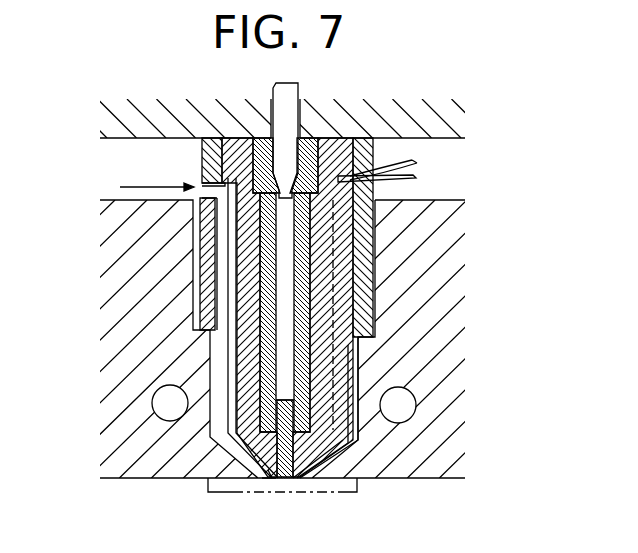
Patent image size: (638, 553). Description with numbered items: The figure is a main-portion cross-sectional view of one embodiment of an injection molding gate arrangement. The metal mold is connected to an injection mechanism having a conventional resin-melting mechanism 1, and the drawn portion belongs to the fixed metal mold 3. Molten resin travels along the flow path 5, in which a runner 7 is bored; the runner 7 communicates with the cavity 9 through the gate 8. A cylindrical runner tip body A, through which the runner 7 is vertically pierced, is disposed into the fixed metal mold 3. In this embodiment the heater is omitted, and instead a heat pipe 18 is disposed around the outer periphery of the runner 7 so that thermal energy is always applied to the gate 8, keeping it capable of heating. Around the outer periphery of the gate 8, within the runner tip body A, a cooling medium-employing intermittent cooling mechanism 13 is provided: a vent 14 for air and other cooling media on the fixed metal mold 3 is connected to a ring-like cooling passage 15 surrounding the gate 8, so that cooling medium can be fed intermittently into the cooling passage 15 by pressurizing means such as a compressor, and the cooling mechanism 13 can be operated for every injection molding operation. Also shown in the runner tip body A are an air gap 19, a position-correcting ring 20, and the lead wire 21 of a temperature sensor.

The resin-melting mechanism 1 is at (421, 122).
The fixed metal mold 3 is at (443, 460).
The flow path of the molten resin 5 is at (287, 108).
The runner 7 is at (236, 238).
The gate 8 is at (285, 478).
The cavity 9 is at (228, 492).
The cooling medium-employing intermittent cooling mechanism 13 is at (310, 462).
The vent 14 is at (206, 296).
The cooling passage 15 is at (263, 478).
The heat pipe 18 is at (300, 276).
The air gap 19 is at (170, 478).
The position-correcting ring 20 is at (365, 234).
The lead wire of a temperature sensor 21 is at (418, 172).
The runner tip body A is at (238, 358).